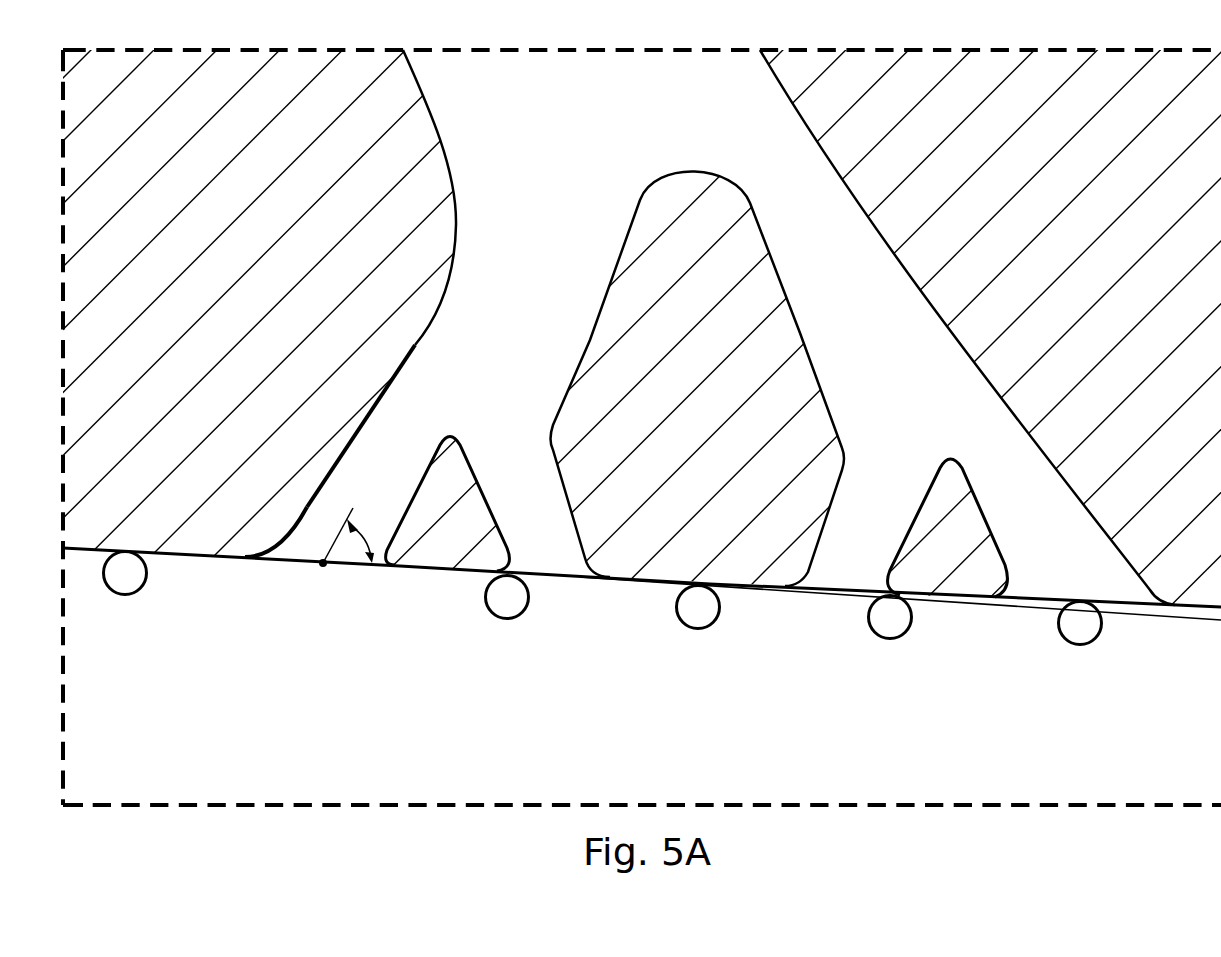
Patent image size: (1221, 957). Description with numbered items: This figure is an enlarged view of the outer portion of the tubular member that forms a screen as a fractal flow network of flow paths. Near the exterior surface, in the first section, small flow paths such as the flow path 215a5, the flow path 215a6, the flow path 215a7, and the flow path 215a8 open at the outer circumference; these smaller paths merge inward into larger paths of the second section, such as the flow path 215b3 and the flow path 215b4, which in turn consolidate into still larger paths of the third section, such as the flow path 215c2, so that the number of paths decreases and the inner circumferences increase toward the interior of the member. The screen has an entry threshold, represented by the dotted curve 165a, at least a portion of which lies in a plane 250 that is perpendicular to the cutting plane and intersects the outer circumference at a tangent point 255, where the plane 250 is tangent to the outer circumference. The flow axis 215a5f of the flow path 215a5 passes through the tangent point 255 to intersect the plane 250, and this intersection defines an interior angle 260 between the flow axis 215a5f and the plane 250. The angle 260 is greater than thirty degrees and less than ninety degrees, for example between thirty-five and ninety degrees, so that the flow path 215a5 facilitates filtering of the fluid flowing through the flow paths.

The flow path 215c2 is at (641, 119).
The flow path 215b3 is at (534, 368).
The flow path 215b4 is at (919, 368).
The flow path 215a5 is at (311, 527).
The flow axis 215a5f is at (295, 543).
The angle 260 is at (373, 537).
The tangent point 255 is at (322, 568).
The flow path 215a6 is at (545, 552).
The flow path 215a7 is at (853, 545).
The flow path 215a8 is at (1037, 515).
The plane 250 is at (1010, 606).
The entry threshold 165a is at (1080, 646).